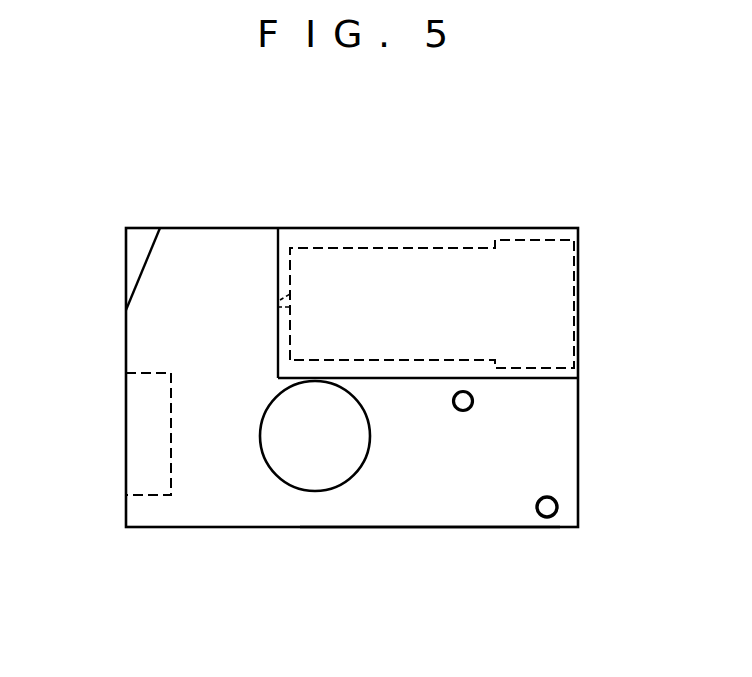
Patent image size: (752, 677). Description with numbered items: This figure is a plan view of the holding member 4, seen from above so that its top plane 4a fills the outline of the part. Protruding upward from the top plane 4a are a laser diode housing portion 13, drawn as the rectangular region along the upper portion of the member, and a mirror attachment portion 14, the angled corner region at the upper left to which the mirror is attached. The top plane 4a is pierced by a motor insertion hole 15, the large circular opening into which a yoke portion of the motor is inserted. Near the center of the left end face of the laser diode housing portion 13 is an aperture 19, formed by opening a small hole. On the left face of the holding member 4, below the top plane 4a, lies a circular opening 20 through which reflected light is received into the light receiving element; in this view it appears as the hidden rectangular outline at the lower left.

The holding member 4 is at (308, 194).
The top plane 4a is at (401, 477).
The laser diode housing portion 13 is at (417, 280).
The mirror attachment portion 14 is at (140, 260).
The motor insertion hole 15 is at (370, 432).
The aperture 19 is at (278, 307).
The circular opening 20 is at (148, 427).